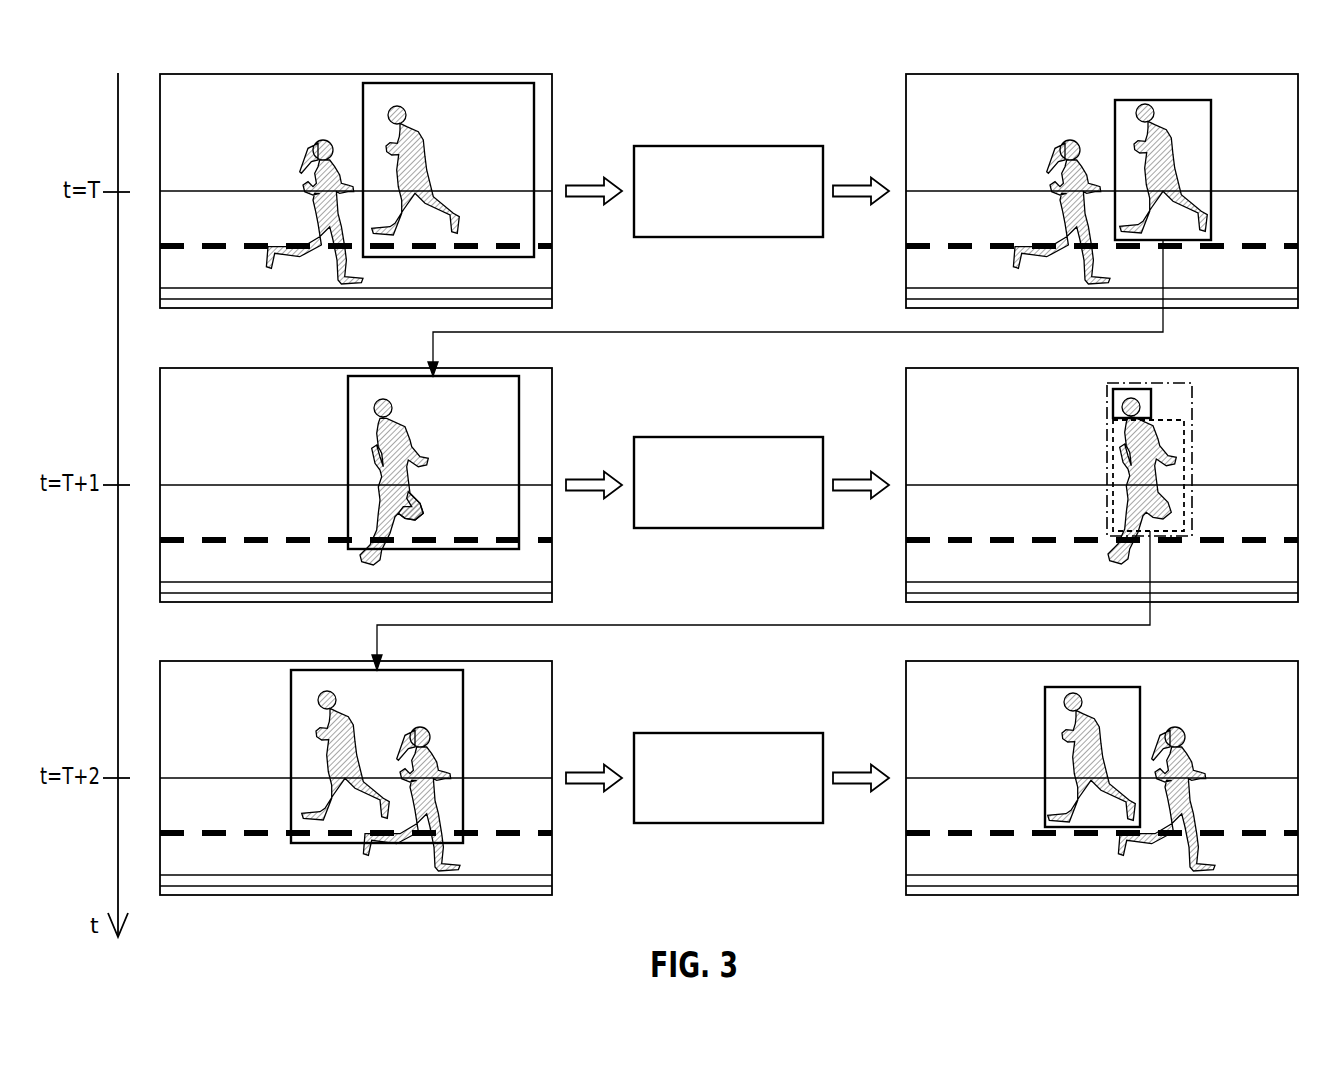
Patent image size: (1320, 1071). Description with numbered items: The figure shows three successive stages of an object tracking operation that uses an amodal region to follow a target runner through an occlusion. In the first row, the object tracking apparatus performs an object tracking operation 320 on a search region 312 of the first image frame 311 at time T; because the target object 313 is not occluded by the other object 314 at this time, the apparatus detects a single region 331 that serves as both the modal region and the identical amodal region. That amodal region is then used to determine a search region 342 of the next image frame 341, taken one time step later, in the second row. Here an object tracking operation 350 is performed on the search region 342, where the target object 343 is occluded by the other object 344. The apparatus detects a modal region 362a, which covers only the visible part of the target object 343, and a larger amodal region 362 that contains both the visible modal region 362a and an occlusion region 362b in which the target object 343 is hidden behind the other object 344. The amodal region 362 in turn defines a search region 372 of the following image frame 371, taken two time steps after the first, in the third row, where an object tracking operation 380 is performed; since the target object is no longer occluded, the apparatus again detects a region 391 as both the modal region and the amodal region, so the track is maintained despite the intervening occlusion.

The T-th image frame 311 is at (552, 88).
The search region 312 is at (534, 132).
The target object 313 is at (424, 140).
The other object 314 is at (312, 149).
The object tracking operation 320 is at (713, 219).
The region 331 is at (1211, 120).
The T+1-th image frame 341 is at (552, 382).
The search region 342 is at (519, 425).
The target object 343 is at (392, 404).
The other object 344 is at (418, 508).
The object tracking operation 350 is at (713, 510).
The amodal region 362 is at (1192, 400).
The modal region 362a is at (1110, 401).
The occlusion region 362b is at (1184, 447).
The T+2-th image frame 371 is at (552, 675).
The search region 372 is at (463, 697).
The object tracking operation 380 is at (713, 806).
The region 391 is at (1140, 700).